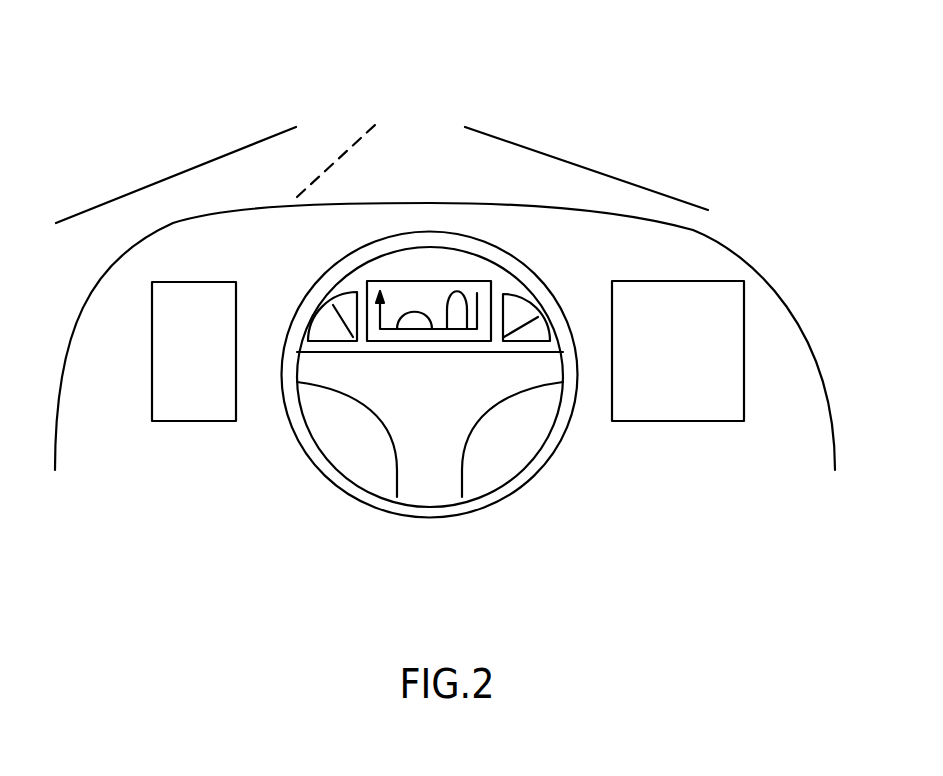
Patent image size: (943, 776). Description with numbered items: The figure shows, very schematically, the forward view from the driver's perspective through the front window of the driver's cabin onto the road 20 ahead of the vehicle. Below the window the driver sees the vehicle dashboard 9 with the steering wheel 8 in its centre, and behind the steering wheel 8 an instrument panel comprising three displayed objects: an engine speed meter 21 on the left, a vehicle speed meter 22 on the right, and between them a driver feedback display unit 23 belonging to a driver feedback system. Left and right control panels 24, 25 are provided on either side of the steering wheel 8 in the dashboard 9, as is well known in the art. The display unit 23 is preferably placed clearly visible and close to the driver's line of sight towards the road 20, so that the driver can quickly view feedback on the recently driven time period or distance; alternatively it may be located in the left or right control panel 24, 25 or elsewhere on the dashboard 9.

The steering wheel 8 is at (357, 496).
The vehicle dashboard 9 is at (588, 257).
The road 20 is at (467, 163).
The engine speed meter 21 is at (332, 330).
The vehicle speed meter 22 is at (515, 318).
The driver feedback display unit 23 is at (394, 316).
The left control panel 24 is at (199, 305).
The right control panel 25 is at (672, 317).